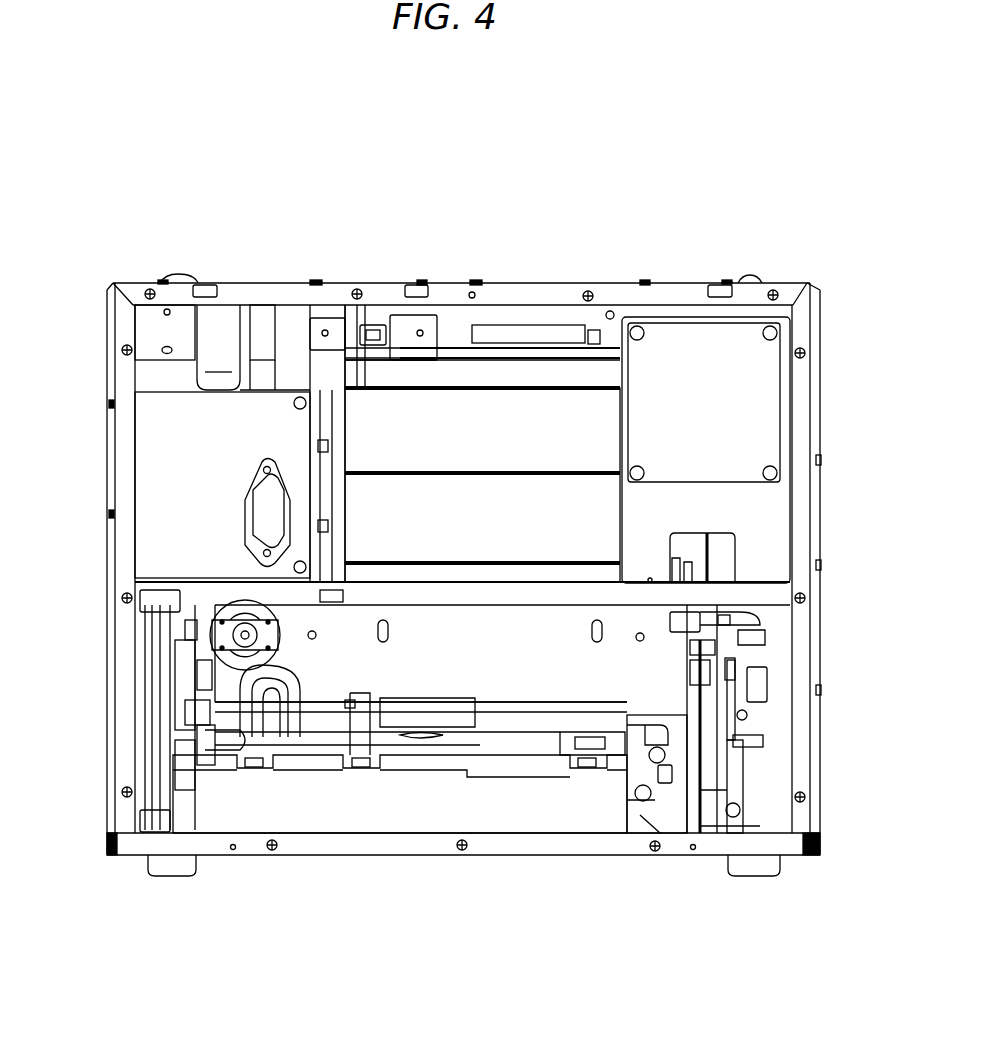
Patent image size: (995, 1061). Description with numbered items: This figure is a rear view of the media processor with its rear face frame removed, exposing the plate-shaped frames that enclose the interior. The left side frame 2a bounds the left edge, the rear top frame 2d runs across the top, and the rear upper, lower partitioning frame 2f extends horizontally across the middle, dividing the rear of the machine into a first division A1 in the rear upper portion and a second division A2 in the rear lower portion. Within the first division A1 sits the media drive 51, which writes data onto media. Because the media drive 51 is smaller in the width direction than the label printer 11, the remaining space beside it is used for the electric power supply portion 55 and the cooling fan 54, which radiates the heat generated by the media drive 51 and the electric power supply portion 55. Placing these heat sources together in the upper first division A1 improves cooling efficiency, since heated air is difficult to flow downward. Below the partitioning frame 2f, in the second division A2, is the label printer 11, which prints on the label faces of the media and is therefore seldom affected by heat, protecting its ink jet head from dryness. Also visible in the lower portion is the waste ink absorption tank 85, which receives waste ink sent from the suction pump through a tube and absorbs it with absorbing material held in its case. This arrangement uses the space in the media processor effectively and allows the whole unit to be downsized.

The left side frame 2a is at (108, 385).
The rear top frame 2d is at (288, 290).
The rear upper, lower partitioning frame 2f is at (738, 590).
The label printer 11 is at (637, 680).
The media drive 51 is at (428, 510).
The cooling fan 54 is at (733, 405).
The electric power supply portion 55 is at (182, 460).
The waste ink absorption tank 85 is at (347, 808).
The first division A1 is at (553, 388).
The second division A2 is at (530, 808).